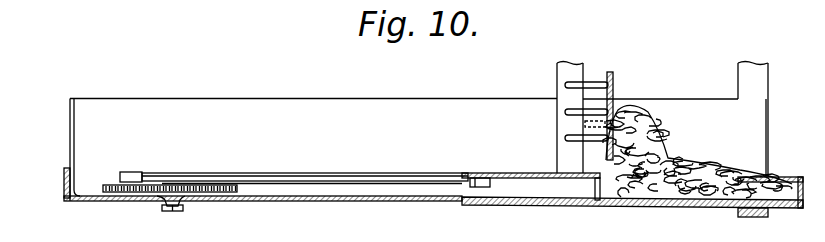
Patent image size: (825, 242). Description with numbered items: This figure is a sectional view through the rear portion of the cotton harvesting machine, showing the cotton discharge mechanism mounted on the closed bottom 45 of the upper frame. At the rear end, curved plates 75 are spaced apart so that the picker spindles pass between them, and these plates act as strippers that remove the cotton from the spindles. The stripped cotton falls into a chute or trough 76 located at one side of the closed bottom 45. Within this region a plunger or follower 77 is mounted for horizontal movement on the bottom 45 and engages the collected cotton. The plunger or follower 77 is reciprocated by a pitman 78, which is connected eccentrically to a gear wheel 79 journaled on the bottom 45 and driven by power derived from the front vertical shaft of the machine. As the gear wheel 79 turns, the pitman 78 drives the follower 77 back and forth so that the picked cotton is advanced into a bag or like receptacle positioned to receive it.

The bottom 45 is at (433, 140).
The curved plates 75 is at (614, 96).
The chute or trough 76 is at (663, 190).
The plunger or follower 77 is at (560, 188).
The pitman 78 is at (415, 180).
The gear wheel 79 is at (201, 185).